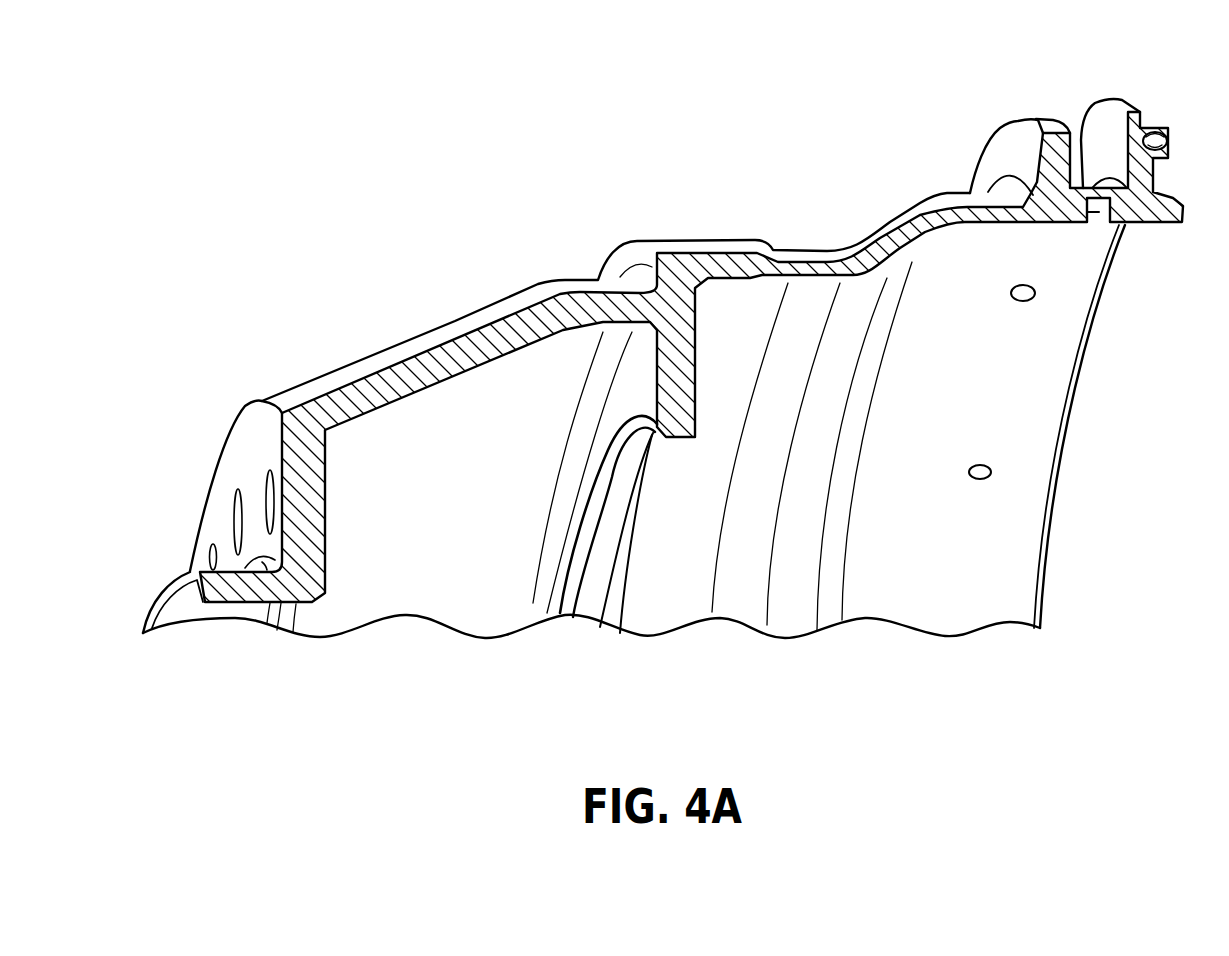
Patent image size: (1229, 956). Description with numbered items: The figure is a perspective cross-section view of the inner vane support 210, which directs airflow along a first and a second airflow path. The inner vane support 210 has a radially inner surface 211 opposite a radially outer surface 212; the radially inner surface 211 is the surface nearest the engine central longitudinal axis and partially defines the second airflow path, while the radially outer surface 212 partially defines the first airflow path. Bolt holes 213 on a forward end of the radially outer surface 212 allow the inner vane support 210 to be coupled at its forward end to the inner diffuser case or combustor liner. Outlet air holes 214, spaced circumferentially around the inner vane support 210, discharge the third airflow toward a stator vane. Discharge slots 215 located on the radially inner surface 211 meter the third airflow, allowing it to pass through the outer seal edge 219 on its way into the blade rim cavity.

The inner vane support 210 is at (614, 478).
The radially inner surface 211 is at (467, 590).
The radially outer surface 212 is at (523, 302).
The bolt holes 213 is at (237, 507).
The outlet air holes 214 is at (1090, 213).
The discharge slots 215 is at (1147, 227).
The outer seal edge 219 is at (1137, 150).